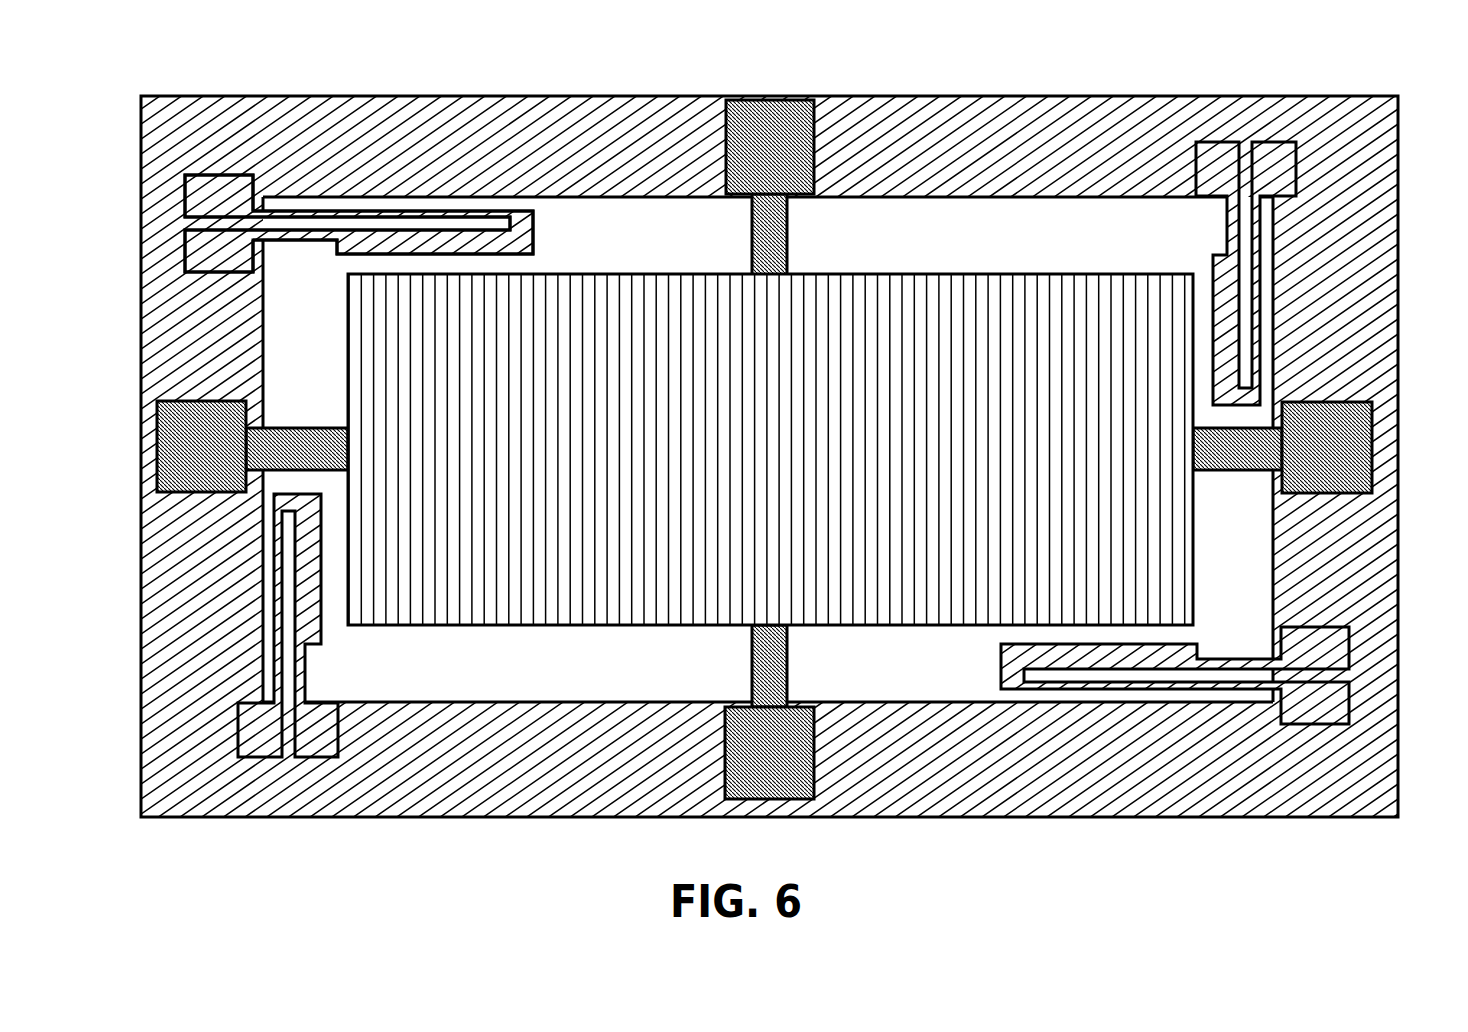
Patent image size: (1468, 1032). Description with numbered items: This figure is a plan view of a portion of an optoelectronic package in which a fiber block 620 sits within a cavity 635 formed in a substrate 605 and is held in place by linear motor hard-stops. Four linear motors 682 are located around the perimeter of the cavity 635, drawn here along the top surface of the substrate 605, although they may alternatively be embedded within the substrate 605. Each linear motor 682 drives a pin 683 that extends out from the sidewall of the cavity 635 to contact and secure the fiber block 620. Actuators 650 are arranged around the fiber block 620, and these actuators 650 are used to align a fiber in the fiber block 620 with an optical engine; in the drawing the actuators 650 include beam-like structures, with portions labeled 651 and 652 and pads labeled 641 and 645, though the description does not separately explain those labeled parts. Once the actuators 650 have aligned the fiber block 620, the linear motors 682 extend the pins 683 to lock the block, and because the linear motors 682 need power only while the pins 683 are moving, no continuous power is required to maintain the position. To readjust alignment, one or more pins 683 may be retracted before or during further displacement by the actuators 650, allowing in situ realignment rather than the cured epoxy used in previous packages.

The substrate 605 is at (945, 770).
The fiber block 620 is at (727, 457).
The cavity 635 is at (975, 225).
The bond pad 641 is at (193, 252).
The bond pad 645 is at (227, 187).
The actuators 650 is at (458, 207).
The electrode beam lower portion 651 is at (460, 250).
The electrode beam upper portion 652 is at (388, 209).
The linear motors 682 is at (800, 150).
The pins 683 is at (787, 232).